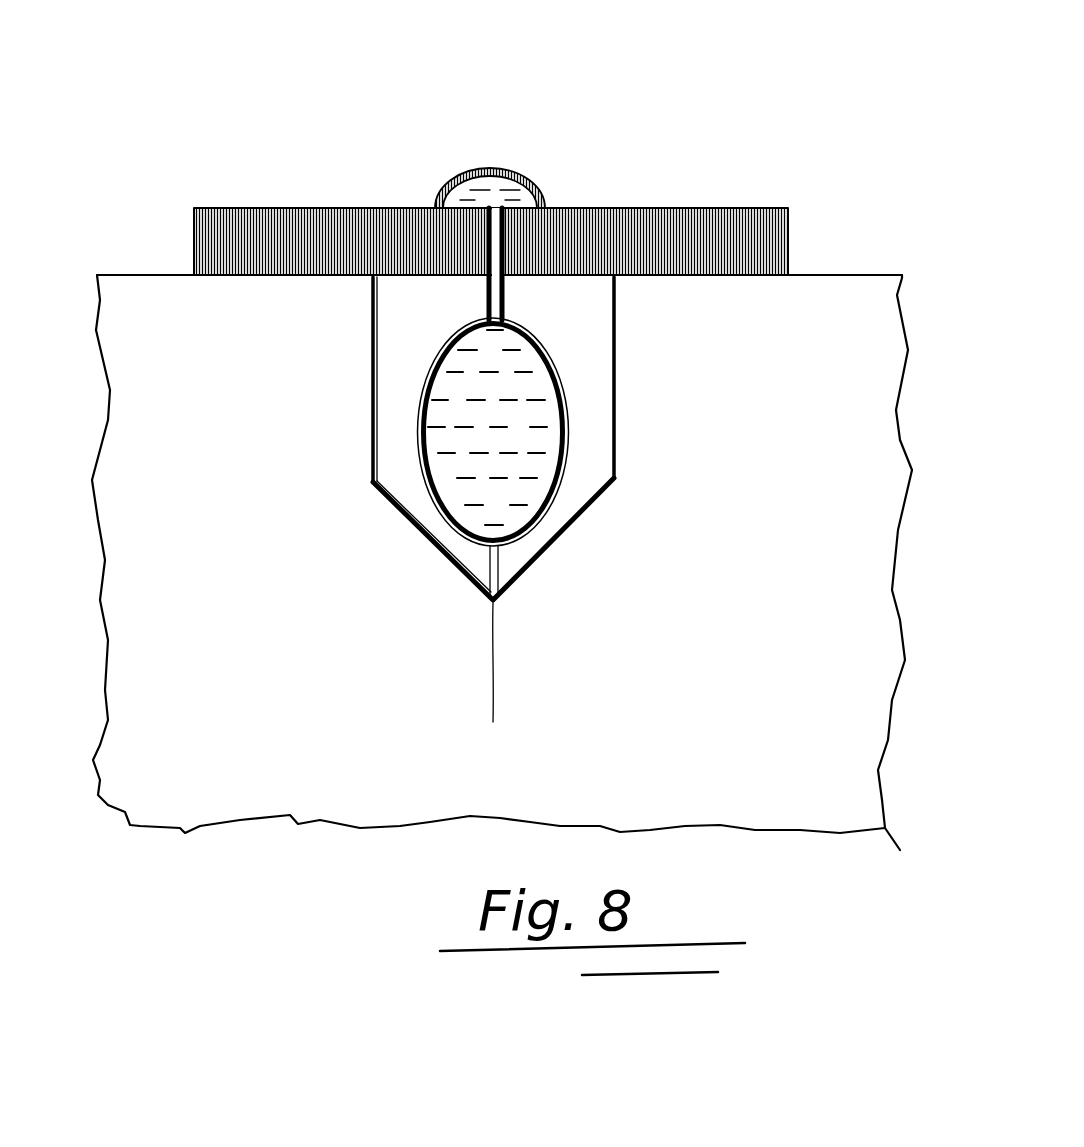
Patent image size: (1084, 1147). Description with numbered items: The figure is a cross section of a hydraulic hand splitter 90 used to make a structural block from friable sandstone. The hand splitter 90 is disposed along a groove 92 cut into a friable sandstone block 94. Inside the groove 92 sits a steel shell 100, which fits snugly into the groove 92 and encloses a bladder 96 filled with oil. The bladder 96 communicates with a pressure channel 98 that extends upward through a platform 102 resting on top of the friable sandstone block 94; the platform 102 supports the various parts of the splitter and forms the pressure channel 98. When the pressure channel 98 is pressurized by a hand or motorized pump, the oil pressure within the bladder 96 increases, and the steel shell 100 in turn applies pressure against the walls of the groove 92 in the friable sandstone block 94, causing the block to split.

The hand splitter 90 is at (543, 130).
The groove 92 is at (430, 540).
The friable sandstone block 94 is at (840, 313).
The bladder 96 is at (520, 488).
The pressure channel 98 is at (458, 183).
The steel shell 100 is at (397, 340).
The platform 102 is at (320, 242).